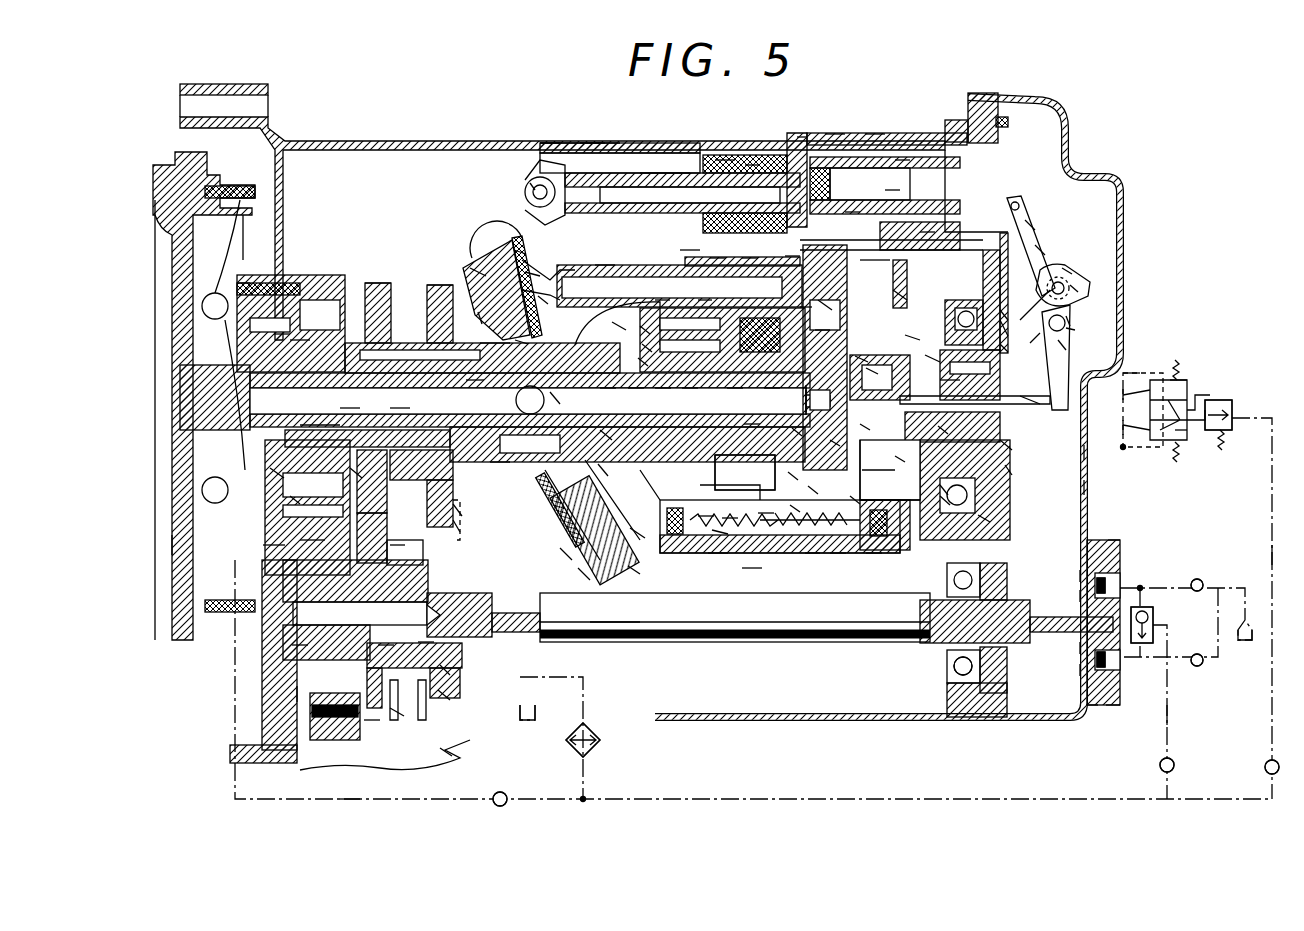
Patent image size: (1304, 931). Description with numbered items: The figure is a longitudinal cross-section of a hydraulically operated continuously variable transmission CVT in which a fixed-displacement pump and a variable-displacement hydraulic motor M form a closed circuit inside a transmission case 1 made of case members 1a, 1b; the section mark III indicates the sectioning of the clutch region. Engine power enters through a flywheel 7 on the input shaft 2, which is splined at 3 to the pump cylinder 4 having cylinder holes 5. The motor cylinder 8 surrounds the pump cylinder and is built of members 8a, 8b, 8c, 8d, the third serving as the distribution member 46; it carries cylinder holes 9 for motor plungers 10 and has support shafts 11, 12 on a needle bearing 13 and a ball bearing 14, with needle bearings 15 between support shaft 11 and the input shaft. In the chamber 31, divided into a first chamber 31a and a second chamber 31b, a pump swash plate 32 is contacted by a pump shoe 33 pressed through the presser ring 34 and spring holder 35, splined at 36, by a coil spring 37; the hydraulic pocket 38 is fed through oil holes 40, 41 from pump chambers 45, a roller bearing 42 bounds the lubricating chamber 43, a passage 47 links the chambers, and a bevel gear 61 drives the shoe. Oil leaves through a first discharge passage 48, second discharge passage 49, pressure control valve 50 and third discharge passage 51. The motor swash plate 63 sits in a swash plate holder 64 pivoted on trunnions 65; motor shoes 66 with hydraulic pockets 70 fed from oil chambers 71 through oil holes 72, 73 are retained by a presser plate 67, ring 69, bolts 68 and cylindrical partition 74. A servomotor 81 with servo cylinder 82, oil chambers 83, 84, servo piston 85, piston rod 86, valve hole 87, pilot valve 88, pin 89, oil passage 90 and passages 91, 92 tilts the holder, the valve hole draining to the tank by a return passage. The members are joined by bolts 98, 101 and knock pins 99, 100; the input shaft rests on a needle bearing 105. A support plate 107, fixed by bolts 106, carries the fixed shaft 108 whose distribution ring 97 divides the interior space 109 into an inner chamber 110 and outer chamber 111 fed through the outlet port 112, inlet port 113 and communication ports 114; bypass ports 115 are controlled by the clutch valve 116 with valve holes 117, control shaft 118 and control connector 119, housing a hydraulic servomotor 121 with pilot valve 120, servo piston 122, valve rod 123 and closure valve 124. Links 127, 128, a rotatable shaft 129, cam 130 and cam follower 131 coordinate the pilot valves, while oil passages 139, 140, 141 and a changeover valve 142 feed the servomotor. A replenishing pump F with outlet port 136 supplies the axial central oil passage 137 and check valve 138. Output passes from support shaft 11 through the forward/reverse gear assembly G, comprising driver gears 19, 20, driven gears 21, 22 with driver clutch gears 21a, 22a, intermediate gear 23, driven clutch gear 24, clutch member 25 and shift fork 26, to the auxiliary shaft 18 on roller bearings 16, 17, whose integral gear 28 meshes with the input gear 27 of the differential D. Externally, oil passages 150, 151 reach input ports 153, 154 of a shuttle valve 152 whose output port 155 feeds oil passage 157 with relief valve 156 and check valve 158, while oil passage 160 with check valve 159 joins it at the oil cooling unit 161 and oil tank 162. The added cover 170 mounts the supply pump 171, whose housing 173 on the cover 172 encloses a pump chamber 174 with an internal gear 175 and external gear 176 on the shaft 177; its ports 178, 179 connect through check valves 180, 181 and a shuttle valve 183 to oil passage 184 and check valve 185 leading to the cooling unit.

The transmission case 1 is at (605, 133).
The case member 1a is at (550, 143).
The case member 1b is at (600, 143).
The input shaft 2 is at (400, 408).
The splines 3 is at (772, 390).
The pump cylinder 4 is at (752, 420).
The cylinder holes 5 is at (766, 513).
The flywheel 7 is at (172, 545).
The motor cylinder 8 is at (718, 554).
The first member 8a is at (618, 324).
The second member 8b is at (718, 258).
The third member 8c is at (812, 556).
The fourth member 8d is at (874, 556).
The cylinder holes 9 is at (750, 258).
The motor plungers 10 is at (605, 265).
The support shaft 11 is at (500, 462).
The support shaft 12 is at (1008, 316).
The needle bearing 13 is at (300, 340).
The ball bearing 14 is at (942, 500).
The needle bearings 15 is at (350, 408).
The roller bearing 16 is at (300, 645).
The roller bearing 17 is at (948, 666).
The auxiliary shaft 18 is at (624, 613).
The driver gear 19 is at (378, 283).
The driver gear 20 is at (436, 285).
The driven gear 21 is at (372, 722).
The driver clutch gear 21a is at (386, 645).
The driven gear 22 is at (445, 696).
The driver clutch gear 22a is at (448, 670).
The intermediate gear 23 is at (460, 510).
The driven clutch gear 24 is at (425, 642).
The clutch member 25 is at (398, 545).
The shift fork 26 is at (398, 712).
The input gear 27 is at (297, 694).
The integral gear 28 is at (312, 540).
The hydraulically hermetic chamber 31 is at (638, 535).
The first chamber 31a is at (646, 348).
The second chamber 31b is at (705, 300).
The pump swash plate 32 is at (644, 330).
The pump shoe 33 is at (606, 436).
The presser ring 34 is at (636, 390).
The spring holder 35 is at (640, 362).
The splines 36 is at (663, 390).
The coil spring 37 is at (735, 390).
The hydraulic pocket 38 is at (608, 390).
The oil hole 40 is at (730, 518).
The oil hole 41 is at (762, 472).
The roller bearing 42 is at (604, 470).
The lubricating chamber 43 is at (662, 300).
The pump chambers 45 is at (794, 476).
The distribution member 46 is at (830, 292).
The passage 47 is at (690, 390).
The first discharge passage 48 is at (475, 380).
The second discharge passage 49 is at (275, 472).
The pressure control valve 50 is at (358, 472).
The third discharge passage 51 is at (298, 500).
The bevel gear 61 is at (706, 516).
The motor swash plate 63 is at (566, 555).
The swash plate holder 64 is at (584, 575).
The trunnions 65 is at (555, 398).
The motor shoes 66 is at (545, 300).
The presser plate 67 is at (522, 343).
The bolts 68 is at (520, 250).
The ring 69 is at (636, 570).
The hydraulic pocket 70 is at (478, 270).
The oil chambers 71 is at (884, 294).
The oil hole 72 is at (532, 272).
The oil hole 73 is at (478, 318).
The cylindrical partition 74 is at (500, 359).
The servomotor 81 is at (835, 134).
The servo cylinder 82 is at (875, 134).
The lefthand oil chamber 83 is at (800, 137).
The righthand oil chamber 84 is at (902, 160).
The servo piston 85 is at (850, 212).
The piston rod 86 is at (668, 169).
The valve hole 87 is at (724, 160).
The pilot valve 88 is at (892, 190).
The pin 89 is at (530, 183).
The oil passage 90 is at (926, 232).
The passage 91 is at (792, 256).
The passage 92 is at (750, 165).
The distribution ring 97 is at (862, 358).
The bolts 98 is at (720, 532).
The knock pin 99 is at (798, 508).
The knock pin 100 is at (856, 500).
The bolts 101 is at (838, 556).
The needle bearing 105 is at (798, 432).
The bolts 106 is at (997, 123).
The support plate 107 is at (1010, 447).
The fixed shaft 108 is at (912, 338).
The interior space 109 is at (900, 292).
The inner chamber 110 is at (815, 490).
The outer chamber 111 is at (890, 489).
The outlet port 112 is at (822, 330).
The inlet port 113 is at (836, 443).
The communication ports 114 is at (806, 305).
The bypass ports 115 is at (930, 358).
The clutch valve 116 is at (950, 380).
The valve holes 117 is at (900, 460).
The control shaft 118 is at (985, 520).
The control connector 119 is at (1012, 470).
The pilot valve 120 is at (1030, 408).
The hydraulic servomotor 121 is at (942, 490).
The servo piston 122 is at (945, 430).
The valve rod 123 is at (872, 370).
The closure valve 124 is at (866, 428).
The link 127 is at (1030, 225).
The link 128 is at (1064, 345).
The rotatable shaft 129 is at (1068, 270).
The cam 130 is at (1075, 290).
The cam follower 131 is at (1070, 320).
The outlet port 136 is at (280, 334).
The axial central oil passage 137 is at (332, 404).
The check valve 138 is at (810, 401).
The oil passage 139 is at (1008, 328).
The oil passage 140 is at (1082, 452).
The oil passage 141 is at (1040, 250).
The changeover valve 142 is at (1005, 348).
The oil passage 150 is at (1125, 373).
The oil passage 151 is at (1124, 450).
The shuttle valve 152 is at (1180, 380).
The input port 153 is at (1124, 392).
The input port 154 is at (1124, 427).
The output port 155 is at (1182, 432).
The relief valve 156 is at (1232, 405).
The oil passage 157 is at (1272, 556).
The check valve 158 is at (1266, 771).
The check valve 159 is at (508, 795).
The oil passage 160 is at (348, 797).
The oil cooling unit 161 is at (592, 745).
The oil tank 162 is at (1245, 630).
The cover 170 is at (1086, 487).
The supply pump 171 is at (1118, 545).
The cover 172 is at (1092, 706).
The housing 173 is at (1114, 706).
The pump chamber 174 is at (1076, 576).
The internal gear 175 is at (1080, 670).
The external gear 176 is at (1078, 596).
The shaft 177 is at (1078, 648).
The port 178 is at (1112, 580).
The port 179 is at (1112, 664).
The check valve 180 is at (1197, 579).
The check valve 181 is at (1197, 666).
The shuttle valve 183 is at (1153, 615).
The oil passage 184 is at (1168, 714).
The check valve 185 is at (1173, 767).
The continuously variable transmission CVT is at (755, 572).
The hydraulic motor M is at (686, 248).
The replenishing pump F is at (237, 288).
The forward/reverse gear assembly G is at (460, 525).
The differential D is at (445, 750).
The section III is at (272, 545).